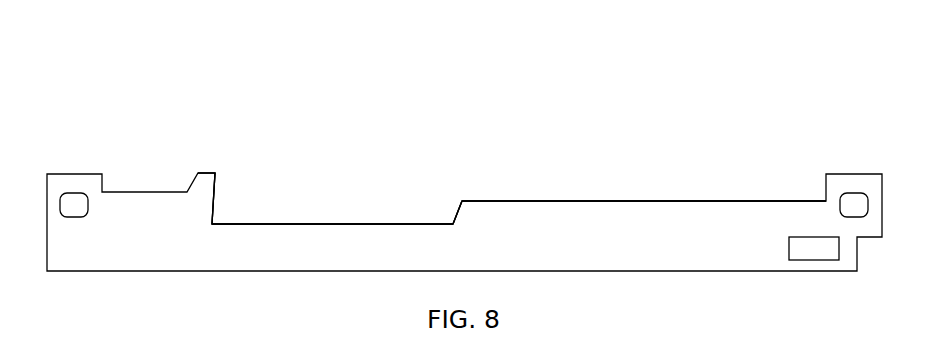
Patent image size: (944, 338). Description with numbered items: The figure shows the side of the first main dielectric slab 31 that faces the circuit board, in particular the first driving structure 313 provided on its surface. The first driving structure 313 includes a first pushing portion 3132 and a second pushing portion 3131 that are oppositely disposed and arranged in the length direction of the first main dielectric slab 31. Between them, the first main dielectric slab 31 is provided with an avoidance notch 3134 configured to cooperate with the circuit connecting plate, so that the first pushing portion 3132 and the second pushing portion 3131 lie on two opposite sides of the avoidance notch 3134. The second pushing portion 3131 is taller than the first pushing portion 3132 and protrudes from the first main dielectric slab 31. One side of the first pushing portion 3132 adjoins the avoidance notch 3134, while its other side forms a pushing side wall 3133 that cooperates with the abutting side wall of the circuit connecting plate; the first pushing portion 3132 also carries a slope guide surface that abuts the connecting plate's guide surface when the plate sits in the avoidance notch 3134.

The first main dielectric slab 31 is at (711, 217).
The first driving structure 313 is at (573, 72).
The second pushing portion 3131 is at (215, 173).
The first pushing portion 3132 is at (454, 218).
The pushing side wall 3133 is at (546, 201).
The avoidance notch 3134 is at (316, 224).